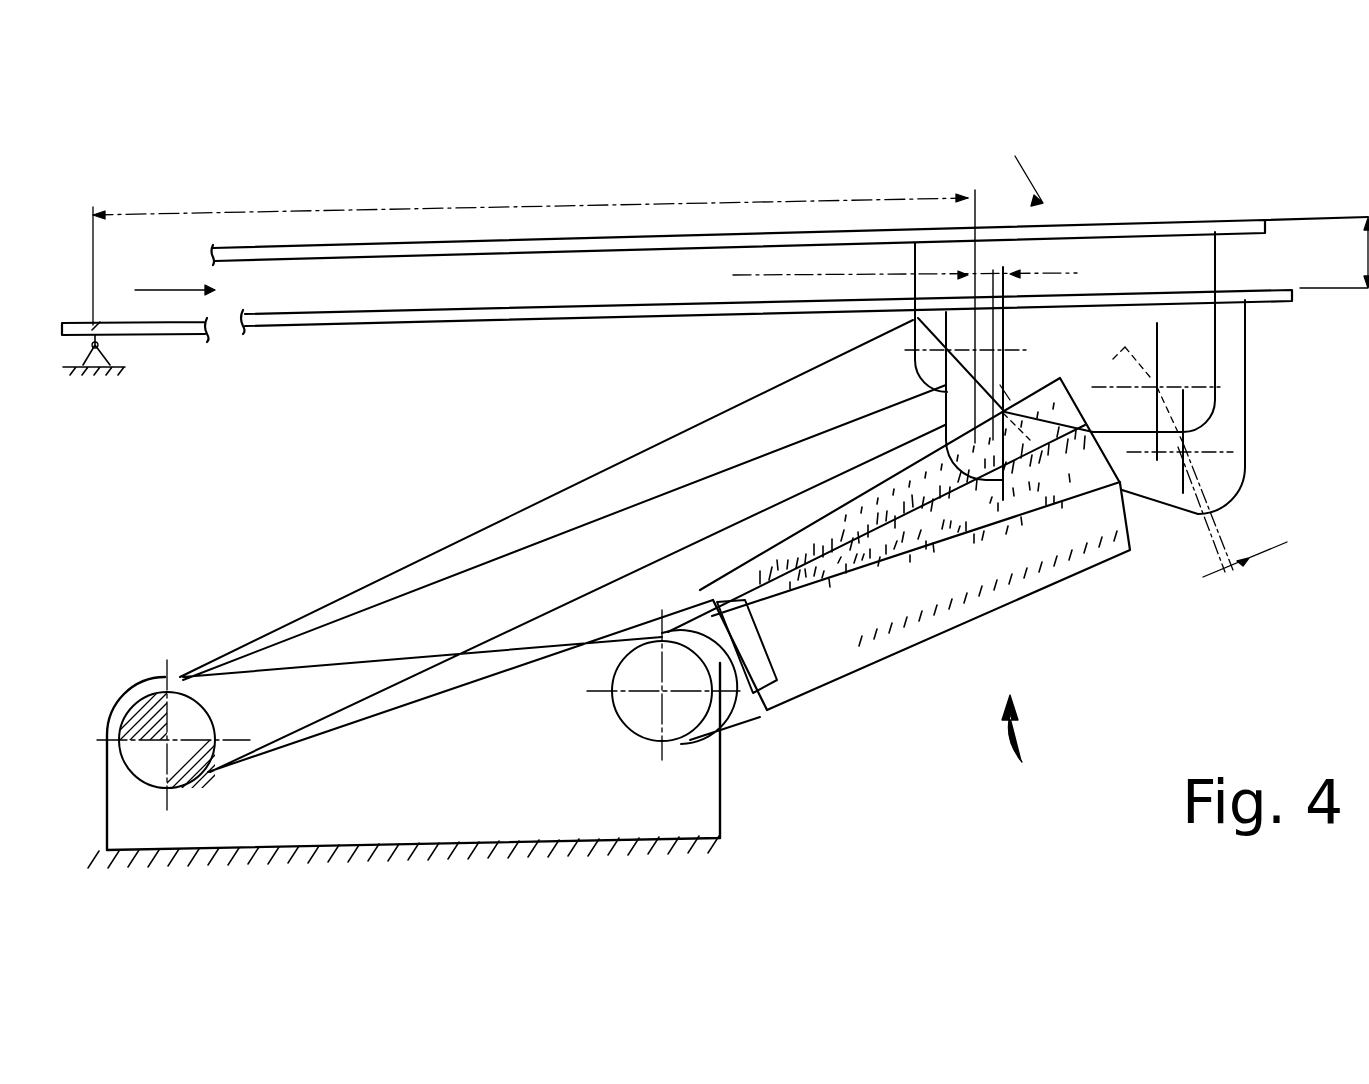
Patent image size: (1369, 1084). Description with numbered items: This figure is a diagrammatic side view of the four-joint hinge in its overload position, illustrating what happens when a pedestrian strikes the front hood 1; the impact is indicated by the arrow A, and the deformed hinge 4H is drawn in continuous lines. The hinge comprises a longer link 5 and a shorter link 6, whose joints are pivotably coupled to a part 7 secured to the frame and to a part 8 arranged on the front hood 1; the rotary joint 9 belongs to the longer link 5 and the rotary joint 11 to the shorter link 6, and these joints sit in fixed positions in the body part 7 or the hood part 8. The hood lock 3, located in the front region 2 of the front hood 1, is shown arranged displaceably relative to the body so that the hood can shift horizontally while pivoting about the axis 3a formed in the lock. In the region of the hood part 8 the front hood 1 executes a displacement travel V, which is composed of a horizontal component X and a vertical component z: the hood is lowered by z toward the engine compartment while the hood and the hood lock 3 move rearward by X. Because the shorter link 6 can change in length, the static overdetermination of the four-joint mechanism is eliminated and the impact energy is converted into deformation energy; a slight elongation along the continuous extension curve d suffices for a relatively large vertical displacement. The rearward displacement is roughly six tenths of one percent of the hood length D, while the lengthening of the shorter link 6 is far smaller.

The front hood 1 is at (460, 241).
The front region 2 is at (180, 330).
The hood lock 3 is at (90, 353).
The axis 3a is at (110, 327).
The longer link 5 is at (483, 560).
The shorter link 6 is at (858, 677).
The part secured to the frame 7 is at (707, 807).
The part arranged on the front hood 8 is at (1245, 397).
The rotary joint 9 is at (148, 768).
The rotary joint 11 is at (648, 723).
The length of the front hood D is at (635, 207).
The horizontal component X is at (993, 270).
The arrow A is at (1015, 156).
The displacement travel V is at (1000, 385).
The vertical component z is at (1365, 256).
The extension curve d is at (1231, 577).
The four-joint hinge in overload position 4H is at (1044, 752).